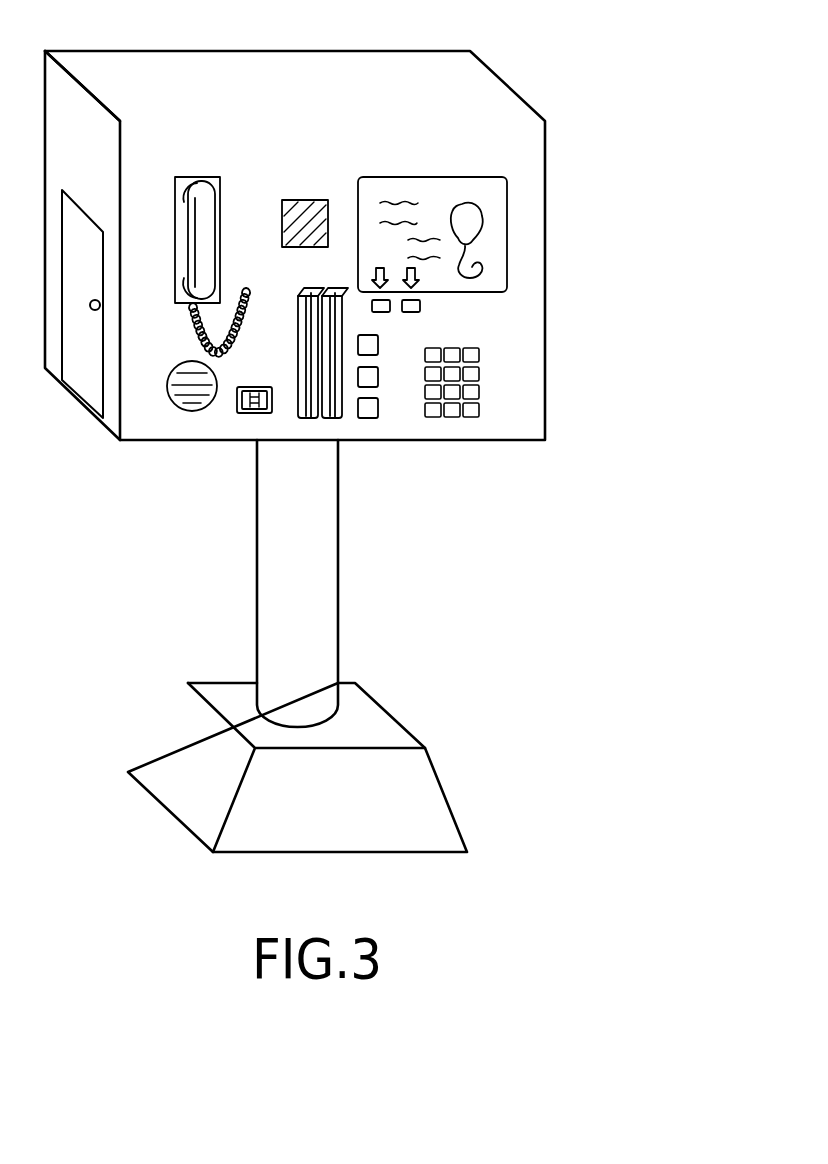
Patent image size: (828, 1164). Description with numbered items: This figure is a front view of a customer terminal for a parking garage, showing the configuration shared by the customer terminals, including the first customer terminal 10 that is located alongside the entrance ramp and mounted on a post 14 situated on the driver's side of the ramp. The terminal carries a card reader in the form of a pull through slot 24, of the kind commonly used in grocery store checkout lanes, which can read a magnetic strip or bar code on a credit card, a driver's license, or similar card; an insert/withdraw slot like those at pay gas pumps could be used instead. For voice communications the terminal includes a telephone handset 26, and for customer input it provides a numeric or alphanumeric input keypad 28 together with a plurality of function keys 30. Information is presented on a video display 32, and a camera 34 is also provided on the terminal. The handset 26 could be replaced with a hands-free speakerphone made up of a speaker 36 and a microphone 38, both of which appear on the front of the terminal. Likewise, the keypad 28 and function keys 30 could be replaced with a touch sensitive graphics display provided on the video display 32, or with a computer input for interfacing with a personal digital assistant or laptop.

The first customer terminal 10 is at (552, 66).
The post 14 is at (327, 552).
The pull through slot 24 is at (297, 317).
The telephone handset 26 is at (190, 226).
The input keypad 28 is at (500, 366).
The function keys 30 is at (400, 322).
The video display 32 is at (494, 178).
The camera 34 is at (303, 200).
The speaker 36 is at (168, 393).
The microphone 38 is at (248, 418).